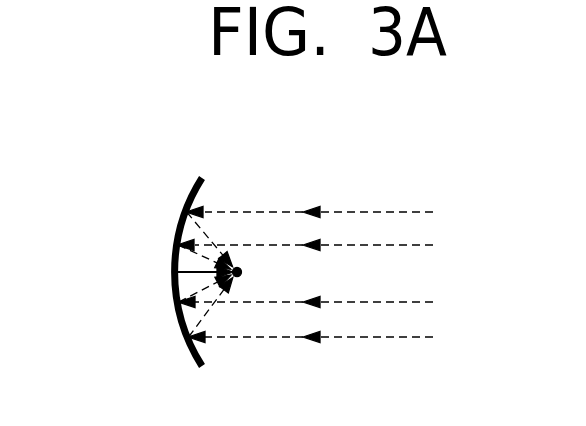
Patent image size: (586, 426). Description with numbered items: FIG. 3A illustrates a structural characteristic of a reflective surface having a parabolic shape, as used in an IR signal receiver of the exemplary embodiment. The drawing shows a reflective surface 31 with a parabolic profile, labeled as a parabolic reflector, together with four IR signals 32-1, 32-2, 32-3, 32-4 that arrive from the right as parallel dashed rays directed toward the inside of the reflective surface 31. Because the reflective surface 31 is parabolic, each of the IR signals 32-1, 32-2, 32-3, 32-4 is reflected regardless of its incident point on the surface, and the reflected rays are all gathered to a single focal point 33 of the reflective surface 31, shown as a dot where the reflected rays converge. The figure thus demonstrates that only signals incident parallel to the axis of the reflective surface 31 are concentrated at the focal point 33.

The reflective surface 31 is at (174, 252).
The IR signal 32-1 is at (398, 212).
The IR signal 32-2 is at (398, 245).
The IR signal 32-3 is at (398, 302).
The IR signal 32-4 is at (398, 337).
The focal point 33 is at (242, 271).